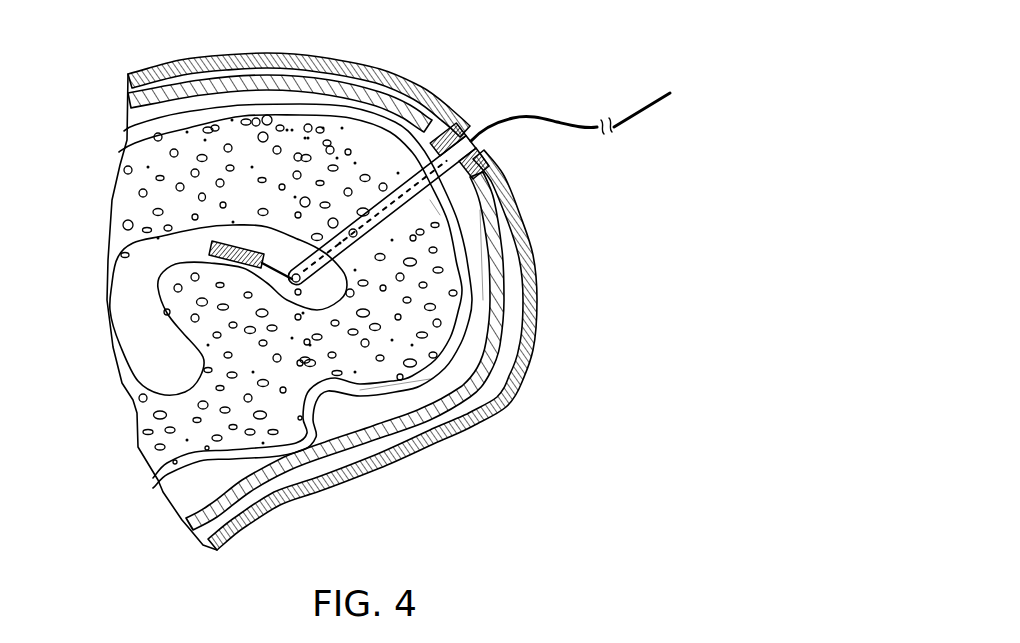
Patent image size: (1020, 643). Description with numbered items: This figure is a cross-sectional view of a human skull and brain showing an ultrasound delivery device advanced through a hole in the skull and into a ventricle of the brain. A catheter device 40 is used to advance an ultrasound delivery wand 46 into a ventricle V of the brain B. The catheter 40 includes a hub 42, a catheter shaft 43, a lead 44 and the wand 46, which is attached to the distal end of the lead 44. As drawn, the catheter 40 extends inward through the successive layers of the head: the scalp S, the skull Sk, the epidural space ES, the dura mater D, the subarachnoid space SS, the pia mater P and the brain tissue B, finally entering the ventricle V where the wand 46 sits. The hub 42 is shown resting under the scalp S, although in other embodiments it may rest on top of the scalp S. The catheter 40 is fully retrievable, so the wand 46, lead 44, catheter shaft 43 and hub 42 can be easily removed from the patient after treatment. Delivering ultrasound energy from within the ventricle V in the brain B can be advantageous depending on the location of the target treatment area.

The catheter device 40 is at (415, 170).
The hub 42 is at (487, 172).
The catheter shaft 43 is at (428, 208).
The lead 44 is at (577, 120).
The ultrasound delivery wand 46 is at (205, 256).
The scalp S is at (376, 65).
The skull Sk is at (508, 273).
The epidural space ES is at (486, 302).
The dura mater D is at (452, 376).
The subarachnoid space SS is at (428, 388).
The pia mater P is at (380, 392).
The brain B is at (247, 200).
The ventricle V is at (172, 367).